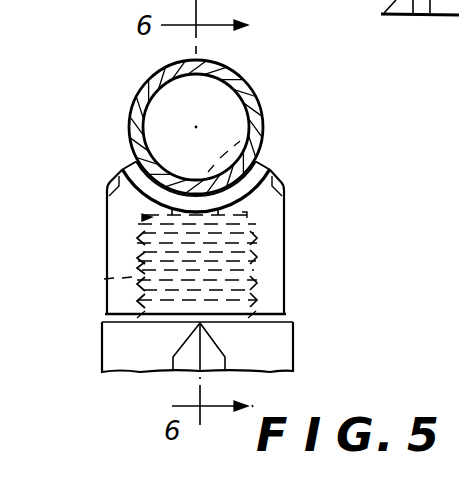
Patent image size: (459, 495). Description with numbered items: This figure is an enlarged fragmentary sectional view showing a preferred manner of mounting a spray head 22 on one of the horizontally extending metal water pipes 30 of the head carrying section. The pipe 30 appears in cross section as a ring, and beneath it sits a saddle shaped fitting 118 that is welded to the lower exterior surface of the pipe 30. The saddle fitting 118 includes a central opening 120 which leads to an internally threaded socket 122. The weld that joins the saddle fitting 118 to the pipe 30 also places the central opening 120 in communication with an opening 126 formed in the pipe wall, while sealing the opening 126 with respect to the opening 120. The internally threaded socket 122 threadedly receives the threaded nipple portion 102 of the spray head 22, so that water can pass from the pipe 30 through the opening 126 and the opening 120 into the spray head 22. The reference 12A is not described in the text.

The water pipe 30 is at (134, 97).
The opening 126 is at (262, 140).
The saddle 12A is at (121, 171).
The saddle shaped fitting 118 is at (284, 197).
The central opening 120 is at (114, 228).
The internally threaded socket 122 is at (97, 280).
The threaded nipple portion 102 is at (258, 312).
The spray head 22 is at (296, 347).